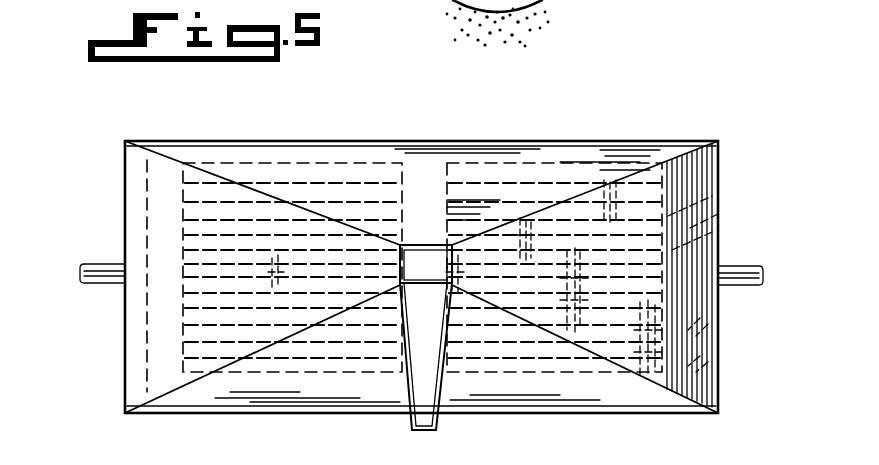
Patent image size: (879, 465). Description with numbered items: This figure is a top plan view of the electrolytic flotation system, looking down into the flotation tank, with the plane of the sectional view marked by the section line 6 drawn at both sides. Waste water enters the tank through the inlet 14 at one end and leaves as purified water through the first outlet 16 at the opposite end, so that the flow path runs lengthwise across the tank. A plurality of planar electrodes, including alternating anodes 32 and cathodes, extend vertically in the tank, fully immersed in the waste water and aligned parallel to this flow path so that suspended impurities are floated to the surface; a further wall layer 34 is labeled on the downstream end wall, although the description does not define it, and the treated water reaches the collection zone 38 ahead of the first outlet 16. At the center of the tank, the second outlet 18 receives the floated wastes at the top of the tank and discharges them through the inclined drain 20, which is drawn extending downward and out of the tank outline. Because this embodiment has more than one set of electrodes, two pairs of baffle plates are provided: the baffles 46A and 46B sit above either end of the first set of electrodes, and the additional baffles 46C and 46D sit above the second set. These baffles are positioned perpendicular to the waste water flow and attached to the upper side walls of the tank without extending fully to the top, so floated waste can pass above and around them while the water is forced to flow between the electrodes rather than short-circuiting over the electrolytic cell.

The section line 6 is at (820, 274).
The inlet 14 is at (92, 264).
The first outlet 16 is at (735, 266).
The second outlet 18 is at (438, 272).
The inclined drain 20 is at (422, 375).
The anodes 32 is at (734, 190).
The wall layer 34 is at (704, 325).
The collection zone 38 is at (708, 363).
The baffle plate 46A is at (183, 172).
The baffle plate 46B is at (403, 170).
The baffle plate 46C is at (450, 176).
The baffle plate 46D is at (668, 196).